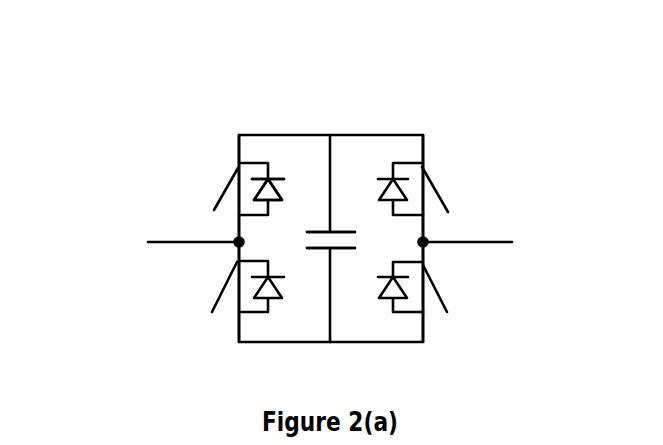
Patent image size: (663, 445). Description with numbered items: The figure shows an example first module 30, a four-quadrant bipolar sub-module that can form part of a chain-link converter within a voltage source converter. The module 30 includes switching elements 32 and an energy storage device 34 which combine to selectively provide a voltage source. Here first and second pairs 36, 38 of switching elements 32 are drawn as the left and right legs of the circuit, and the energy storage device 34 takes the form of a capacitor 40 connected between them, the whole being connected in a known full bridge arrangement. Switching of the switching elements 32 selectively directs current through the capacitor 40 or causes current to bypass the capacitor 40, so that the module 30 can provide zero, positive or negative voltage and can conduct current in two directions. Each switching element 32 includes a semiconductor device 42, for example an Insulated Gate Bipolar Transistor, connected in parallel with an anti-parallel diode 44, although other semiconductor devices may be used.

The module 30 is at (147, 142).
The switching element 32 is at (326, 216).
The energy storage device 34 is at (426, 262).
The first pair of switching elements 36 is at (240, 113).
The second pair of switching elements 38 is at (410, 113).
The capacitor 40 is at (350, 247).
The semiconductor device 42 is at (230, 180).
The anti-parallel diode 44 is at (280, 191).